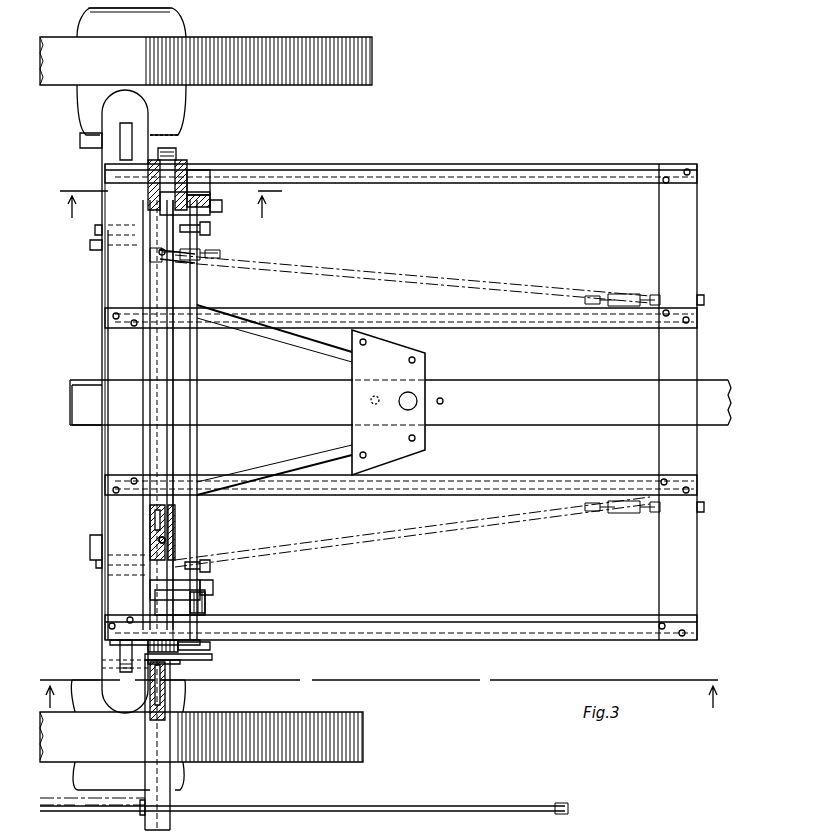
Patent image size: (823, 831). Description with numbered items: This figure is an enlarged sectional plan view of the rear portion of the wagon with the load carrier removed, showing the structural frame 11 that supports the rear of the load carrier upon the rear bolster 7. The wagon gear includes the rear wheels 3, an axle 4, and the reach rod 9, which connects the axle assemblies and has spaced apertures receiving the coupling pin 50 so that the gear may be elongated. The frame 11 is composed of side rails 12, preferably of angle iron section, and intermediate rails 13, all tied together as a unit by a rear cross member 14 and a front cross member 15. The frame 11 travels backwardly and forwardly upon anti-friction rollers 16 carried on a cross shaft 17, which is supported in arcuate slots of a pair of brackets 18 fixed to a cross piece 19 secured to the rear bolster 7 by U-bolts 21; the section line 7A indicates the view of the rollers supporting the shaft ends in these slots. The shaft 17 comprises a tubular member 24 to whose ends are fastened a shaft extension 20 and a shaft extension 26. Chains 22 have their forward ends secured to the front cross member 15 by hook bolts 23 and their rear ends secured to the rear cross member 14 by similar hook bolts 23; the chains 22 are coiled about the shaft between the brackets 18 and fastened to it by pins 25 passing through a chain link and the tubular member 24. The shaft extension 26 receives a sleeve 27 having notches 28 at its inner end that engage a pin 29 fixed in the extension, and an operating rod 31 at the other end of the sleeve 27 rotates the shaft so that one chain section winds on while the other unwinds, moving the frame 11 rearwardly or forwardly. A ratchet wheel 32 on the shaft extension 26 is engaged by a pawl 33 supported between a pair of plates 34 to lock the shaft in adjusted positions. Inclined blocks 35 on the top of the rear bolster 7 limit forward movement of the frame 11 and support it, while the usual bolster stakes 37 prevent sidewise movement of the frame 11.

The rear wheels 3 is at (372, 76).
The axle 4 is at (379, 690).
The rear bolster 7 is at (100, 156).
The section line 7A- 7A is at (163, 200).
The reach rod 9 is at (585, 386).
The structural frame 11 is at (541, 658).
The side rails 12 is at (545, 168).
The intermediate rails 13 is at (530, 327).
The rear cross member 14 is at (110, 516).
The front cross member 15 is at (698, 580).
The anti-friction rollers 16 is at (185, 165).
The cross shaft 17 is at (190, 451).
The brackets 18 is at (185, 212).
The cross piece 19 is at (195, 356).
The shaft extension 20 is at (165, 152).
The U-bolts 21 is at (210, 230).
The chains 22 is at (455, 270).
The hook bolts 23 is at (158, 252).
The tubular member 24 is at (155, 352).
The pins 25 is at (160, 252).
The shaft extension 26 is at (155, 690).
The sleeve 27 is at (172, 793).
The notches 28 is at (180, 659).
The pin 29 is at (150, 666).
The operating rod 31 is at (386, 805).
The ratchet wheel 32 is at (118, 641).
The pawl 33 is at (190, 643).
The plates 34 is at (205, 640).
The inclined blocks 35 is at (100, 548).
The bolster stakes 37 is at (122, 140).
The coupling pin 50 is at (414, 396).